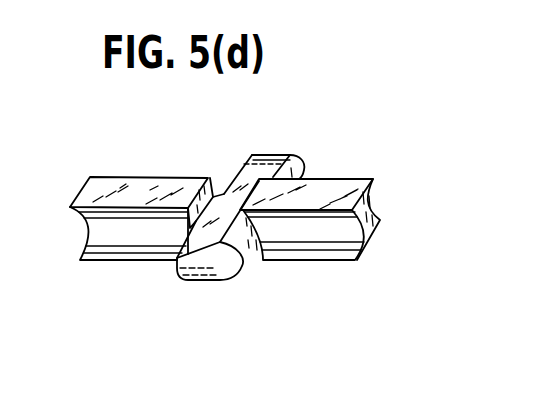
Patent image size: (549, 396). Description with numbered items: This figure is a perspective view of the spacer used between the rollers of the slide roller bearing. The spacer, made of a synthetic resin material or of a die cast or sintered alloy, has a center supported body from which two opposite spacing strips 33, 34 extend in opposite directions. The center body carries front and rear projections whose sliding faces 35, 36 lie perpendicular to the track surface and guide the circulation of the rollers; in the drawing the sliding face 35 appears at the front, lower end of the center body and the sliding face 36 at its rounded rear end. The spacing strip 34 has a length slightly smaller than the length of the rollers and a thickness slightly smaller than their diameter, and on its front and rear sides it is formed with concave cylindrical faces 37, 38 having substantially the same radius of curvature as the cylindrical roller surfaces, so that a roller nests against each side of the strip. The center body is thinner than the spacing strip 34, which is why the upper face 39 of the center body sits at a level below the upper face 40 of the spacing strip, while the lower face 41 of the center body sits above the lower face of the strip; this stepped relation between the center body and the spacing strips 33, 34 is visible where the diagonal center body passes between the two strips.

The spacing strip 33 is at (158, 187).
The spacing strip 34 is at (352, 188).
The sliding face 35 is at (226, 281).
The sliding face 36 is at (303, 161).
The concave cylindrical face 37 is at (128, 246).
The concave cylindrical face 38 is at (376, 204).
The upper face of the center body 39 is at (272, 162).
The upper face of the spacing strip 40 is at (198, 196).
The lower face of the center body 41 is at (253, 262).